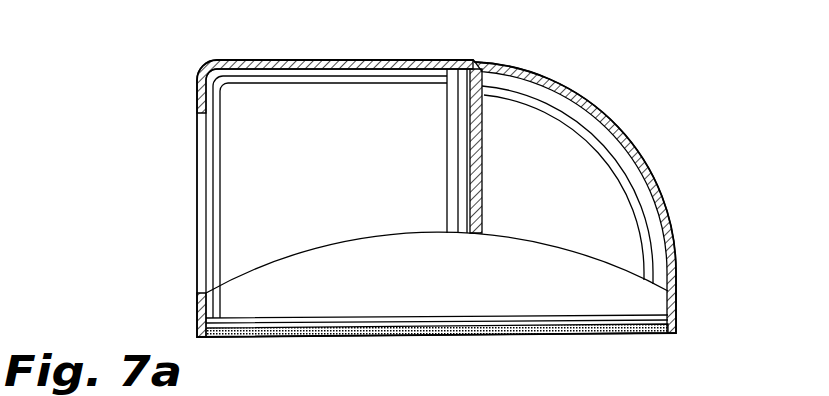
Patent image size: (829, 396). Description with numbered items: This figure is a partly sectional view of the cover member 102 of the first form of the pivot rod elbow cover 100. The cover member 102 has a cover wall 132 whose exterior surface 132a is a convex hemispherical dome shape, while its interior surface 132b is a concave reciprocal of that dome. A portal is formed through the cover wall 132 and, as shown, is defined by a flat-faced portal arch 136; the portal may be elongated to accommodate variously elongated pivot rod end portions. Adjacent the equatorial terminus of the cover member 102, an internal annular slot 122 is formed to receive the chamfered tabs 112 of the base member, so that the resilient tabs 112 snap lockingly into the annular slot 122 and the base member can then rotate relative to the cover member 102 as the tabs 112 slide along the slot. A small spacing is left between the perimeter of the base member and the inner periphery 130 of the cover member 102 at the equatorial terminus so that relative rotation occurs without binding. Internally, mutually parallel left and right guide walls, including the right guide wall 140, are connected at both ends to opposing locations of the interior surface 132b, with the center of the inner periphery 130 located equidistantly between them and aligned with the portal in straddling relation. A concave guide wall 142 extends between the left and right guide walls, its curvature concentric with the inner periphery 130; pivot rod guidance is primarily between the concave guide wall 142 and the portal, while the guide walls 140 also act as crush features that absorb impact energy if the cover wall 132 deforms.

The pivot rod elbow cover 100 is at (182, 300).
The cover member 102 is at (614, 116).
The tabs 112 is at (437, 314).
The internal annular slot 122 is at (592, 316).
The inner periphery 130 is at (637, 334).
The cover wall 132 is at (526, 70).
The exterior surface 132a is at (652, 181).
The interior surface 132b is at (600, 228).
The portal arch 136 is at (200, 66).
The right guide wall 140 is at (250, 152).
The concave guide wall 142 is at (470, 113).